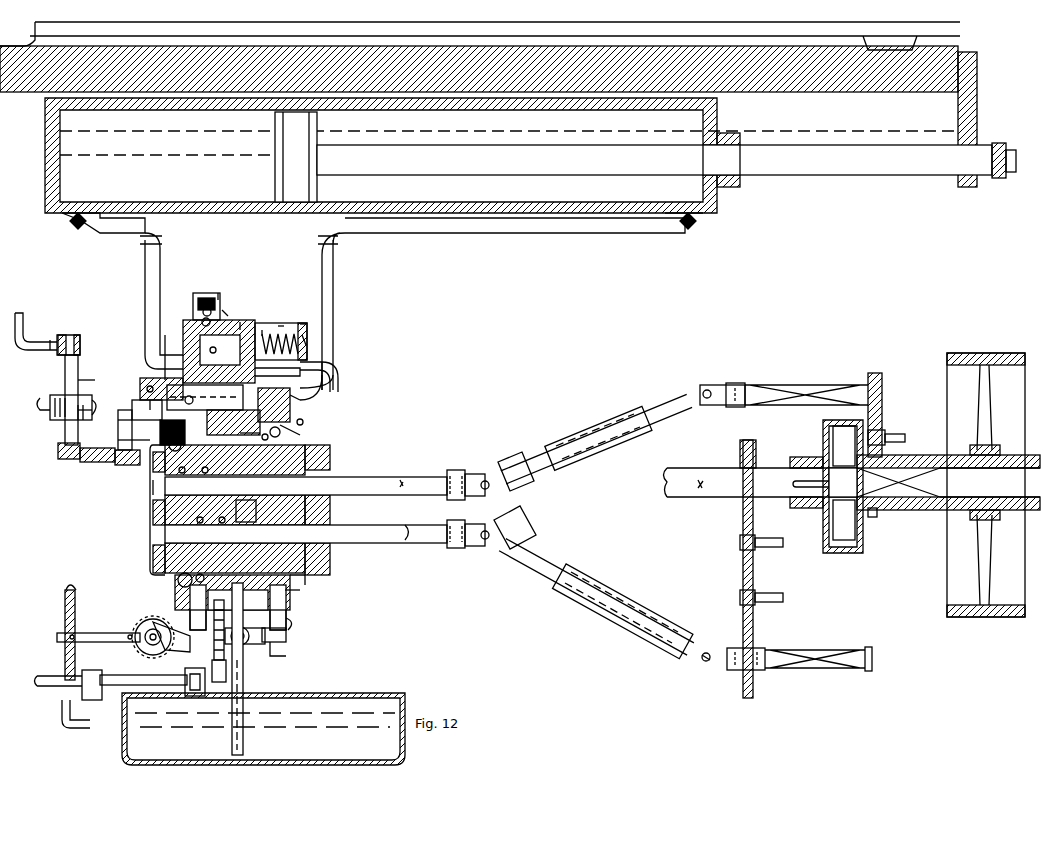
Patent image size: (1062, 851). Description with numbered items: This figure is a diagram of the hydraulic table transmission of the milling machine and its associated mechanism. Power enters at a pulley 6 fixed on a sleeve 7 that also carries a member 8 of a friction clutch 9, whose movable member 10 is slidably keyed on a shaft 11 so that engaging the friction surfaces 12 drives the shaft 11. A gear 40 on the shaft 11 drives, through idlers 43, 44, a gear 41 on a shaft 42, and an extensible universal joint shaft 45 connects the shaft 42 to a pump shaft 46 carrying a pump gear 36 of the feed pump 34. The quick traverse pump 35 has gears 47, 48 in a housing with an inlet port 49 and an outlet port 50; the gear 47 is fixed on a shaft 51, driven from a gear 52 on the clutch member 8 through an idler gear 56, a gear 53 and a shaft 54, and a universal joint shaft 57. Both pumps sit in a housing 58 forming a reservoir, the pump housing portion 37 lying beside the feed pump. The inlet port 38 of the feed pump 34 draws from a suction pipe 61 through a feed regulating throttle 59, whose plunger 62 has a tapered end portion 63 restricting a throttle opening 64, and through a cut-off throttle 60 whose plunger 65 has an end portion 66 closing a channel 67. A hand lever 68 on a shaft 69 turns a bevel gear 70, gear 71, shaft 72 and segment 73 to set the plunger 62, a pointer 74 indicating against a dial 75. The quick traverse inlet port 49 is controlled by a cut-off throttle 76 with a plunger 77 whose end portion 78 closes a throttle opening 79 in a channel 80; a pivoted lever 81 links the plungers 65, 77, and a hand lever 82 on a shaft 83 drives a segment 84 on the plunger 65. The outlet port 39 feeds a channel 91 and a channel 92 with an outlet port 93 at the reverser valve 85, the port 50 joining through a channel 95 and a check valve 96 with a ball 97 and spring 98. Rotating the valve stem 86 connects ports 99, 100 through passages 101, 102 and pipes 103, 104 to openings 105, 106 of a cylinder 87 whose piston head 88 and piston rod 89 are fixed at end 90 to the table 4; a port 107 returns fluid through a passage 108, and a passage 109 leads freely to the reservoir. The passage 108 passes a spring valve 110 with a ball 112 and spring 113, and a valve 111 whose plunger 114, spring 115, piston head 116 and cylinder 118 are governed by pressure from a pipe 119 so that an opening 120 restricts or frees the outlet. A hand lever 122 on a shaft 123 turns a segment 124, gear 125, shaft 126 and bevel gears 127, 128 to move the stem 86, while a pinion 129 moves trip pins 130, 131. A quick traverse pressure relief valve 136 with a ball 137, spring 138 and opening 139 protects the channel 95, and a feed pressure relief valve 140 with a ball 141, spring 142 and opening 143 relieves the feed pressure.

The table 4 is at (530, 22).
The pulley 6 is at (975, 353).
The sleeve 7 is at (918, 460).
The clutch member 8 is at (864, 553).
The friction clutch 9 is at (843, 461).
The movable clutch member 10 is at (823, 438).
The shaft 11 is at (706, 466).
The friction surfaces 12 is at (840, 553).
The feed pump 34 is at (158, 508).
The quick traverse pump 35 is at (298, 577).
The pump gear 36 is at (152, 545).
The housing wall 37 is at (155, 470).
The inlet port 38 is at (162, 560).
The outlet port 39 is at (184, 478).
The gear 40 is at (756, 452).
The gear 41 is at (755, 628).
The shaft 42 is at (812, 668).
The idler gear 43 is at (742, 530).
The idler gear 44 is at (742, 600).
The extensible universal joint shaft 45 is at (592, 618).
The pump shaft 46 is at (368, 522).
The pump gear 47 is at (282, 432).
The pump gear 48 is at (256, 545).
The inlet port 49 is at (315, 560).
The outlet port 50 is at (270, 438).
The shaft 51 is at (360, 478).
The gear 52 is at (877, 515).
The gear 53 is at (882, 375).
The shaft 54 is at (800, 386).
The idler gear 56 is at (888, 430).
The extensible universal joint shaft 57 is at (592, 430).
The housing 58 is at (320, 695).
The feed regulating throttle 59 is at (190, 618).
The cut-off throttle 60 is at (224, 640).
The suction pipe 61 is at (243, 682).
The plunger 62 is at (180, 600).
The tapered end portion 63 is at (196, 580).
The throttle opening 64 is at (178, 578).
The plunger 65 is at (226, 666).
The end portion 66 is at (203, 529).
The channel 67 is at (226, 529).
The hand lever 68 is at (50, 686).
The shaft 69 is at (100, 633).
The bevel gear 70 is at (142, 622).
The gear 71 is at (152, 628).
The shaft 72 is at (150, 648).
The segment 73 is at (180, 650).
The pointer 74 is at (66, 596).
The dial 75 is at (76, 606).
The cut-off throttle 76 is at (280, 642).
The plunger 77 is at (276, 656).
The end portion 78 is at (284, 590).
The throttle opening 79 is at (300, 588).
The channel 80 is at (290, 620).
The pivoted lever 81 is at (244, 645).
The hand lever 82 is at (90, 724).
The shaft 83 is at (118, 675).
The segment 84 is at (193, 696).
The reverser valve 85 is at (145, 388).
The valve stem 86 is at (222, 358).
The cylinder 87 is at (187, 213).
The piston head 88 is at (278, 180).
The piston rod 89 is at (480, 148).
The piston rod end 90 is at (980, 140).
The channel 91 is at (206, 478).
The channel 92 is at (200, 402).
The outlet port 93 is at (152, 384).
The channel 95 is at (248, 436).
The check valve 96 is at (168, 444).
The ball 97 is at (224, 436).
The spring 98 is at (152, 490).
The port 99 is at (178, 360).
The port 100 is at (203, 322).
The passage 101 is at (195, 304).
The passage 102 is at (290, 395).
The pipe 103 is at (148, 297).
The pipe 104 is at (374, 233).
The opening 105 is at (78, 213).
The opening 106 is at (686, 213).
The port 107 is at (208, 390).
The passage 108 is at (240, 322).
The passage 109 is at (265, 372).
The spring valve 110 is at (210, 306).
The valve 111 is at (283, 334).
The ball 112 is at (226, 310).
The spring 113 is at (218, 293).
The plunger 114 is at (280, 326).
The spring 115 is at (262, 330).
The piston head 116 is at (304, 335).
The cylinder 118 is at (302, 322).
The pipe 119 is at (334, 358).
The opening 120 is at (210, 350).
The hand lever 122 is at (26, 326).
The shaft 123 is at (79, 372).
The segment 124 is at (95, 462).
The gear 125 is at (118, 458).
The shaft 126 is at (122, 425).
The bevel gear 127 is at (122, 415).
The bevel gear 128 is at (150, 398).
The pinion 129 is at (52, 418).
The trip pin 130 is at (42, 398).
The trip pin 131 is at (86, 420).
The quick traverse pressure relief valve 136 is at (310, 424).
The ball 137 is at (294, 408).
The spring 138 is at (305, 430).
The opening 139 is at (305, 410).
The feed pressure relief valve 140 is at (110, 395).
The ball 141 is at (146, 405).
The spring 142 is at (125, 442).
The opening 143 is at (70, 459).